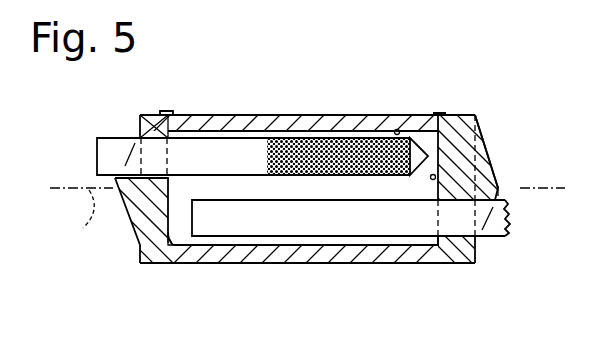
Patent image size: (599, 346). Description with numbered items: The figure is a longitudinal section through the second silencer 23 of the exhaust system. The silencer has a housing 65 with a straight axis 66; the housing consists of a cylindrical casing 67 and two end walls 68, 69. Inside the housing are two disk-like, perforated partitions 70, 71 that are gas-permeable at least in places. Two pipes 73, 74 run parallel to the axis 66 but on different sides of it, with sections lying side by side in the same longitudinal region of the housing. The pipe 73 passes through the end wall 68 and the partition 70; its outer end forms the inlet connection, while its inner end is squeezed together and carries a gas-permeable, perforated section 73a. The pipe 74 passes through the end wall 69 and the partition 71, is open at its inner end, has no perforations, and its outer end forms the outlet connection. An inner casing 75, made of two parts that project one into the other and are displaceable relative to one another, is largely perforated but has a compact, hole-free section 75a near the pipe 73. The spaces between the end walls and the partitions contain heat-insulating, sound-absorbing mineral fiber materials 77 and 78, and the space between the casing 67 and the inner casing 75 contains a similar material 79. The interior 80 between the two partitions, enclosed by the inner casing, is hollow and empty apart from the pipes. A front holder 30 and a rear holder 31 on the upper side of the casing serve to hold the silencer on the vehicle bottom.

The second silencer 23 is at (133, 116).
The front holder 30 is at (167, 110).
The rear holder 31 is at (445, 112).
The housing 65 is at (216, 109).
The axis 66 is at (307, 210).
The cylindrical casing 67 is at (350, 113).
The end wall 68 is at (127, 220).
The end wall 69 is at (487, 153).
The perforated partition 70 is at (168, 262).
The perforated partition 71 is at (497, 178).
The pipe 73 is at (238, 147).
The perforated section 73a is at (362, 147).
The pipe 74 is at (491, 238).
The inner casing 75 is at (235, 251).
The hole-free section 75a is at (400, 130).
The material 77 is at (142, 126).
The material 78 is at (478, 127).
The material 79 is at (410, 253).
The interior 80 is at (504, 196).